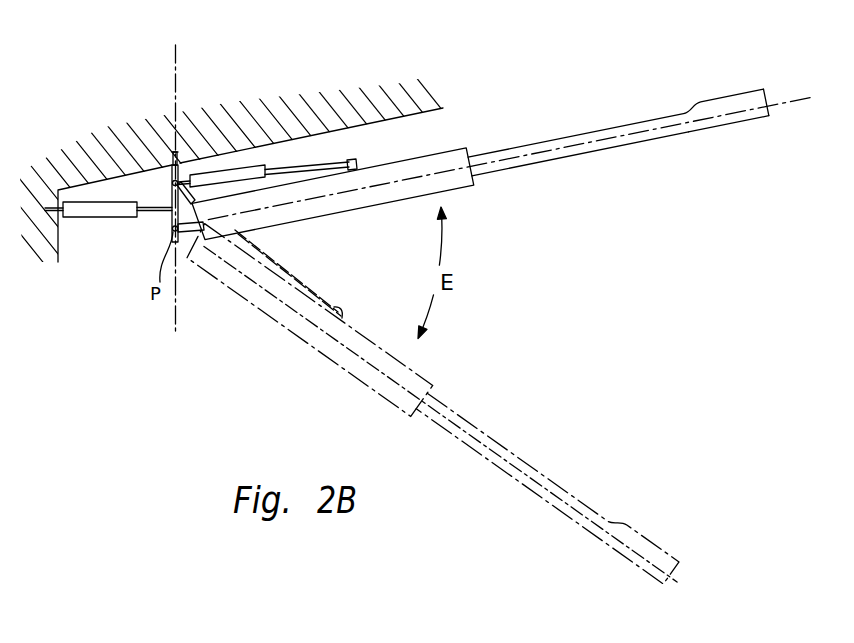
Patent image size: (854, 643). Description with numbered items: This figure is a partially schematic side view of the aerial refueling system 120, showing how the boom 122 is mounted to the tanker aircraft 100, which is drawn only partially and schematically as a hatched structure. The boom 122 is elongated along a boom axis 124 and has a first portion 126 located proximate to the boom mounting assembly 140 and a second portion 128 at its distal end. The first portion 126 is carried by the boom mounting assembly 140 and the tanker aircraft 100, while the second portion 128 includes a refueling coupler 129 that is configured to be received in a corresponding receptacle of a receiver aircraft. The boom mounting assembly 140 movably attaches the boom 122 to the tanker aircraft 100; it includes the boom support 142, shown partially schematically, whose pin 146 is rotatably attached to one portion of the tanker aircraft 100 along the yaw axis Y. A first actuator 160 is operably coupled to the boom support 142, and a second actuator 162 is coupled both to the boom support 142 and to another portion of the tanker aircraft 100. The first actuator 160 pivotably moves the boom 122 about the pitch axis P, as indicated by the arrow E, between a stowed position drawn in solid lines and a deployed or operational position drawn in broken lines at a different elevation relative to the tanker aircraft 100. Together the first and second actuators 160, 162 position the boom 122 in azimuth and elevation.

The tanker aircraft 100 is at (93, 146).
The aerial refueling system 120 is at (453, 307).
The boom 122 is at (503, 141).
The boom axis 124 is at (805, 98).
The first portion of the boom 126 is at (290, 248).
The second portion of the boom 128 is at (673, 76).
The refueling coupler 129 is at (780, 112).
The boom mounting assembly 140 is at (192, 188).
The boom support 142 is at (180, 167).
The pin 146 is at (171, 153).
The first actuator 160 is at (258, 171).
The second actuator 162 is at (100, 217).